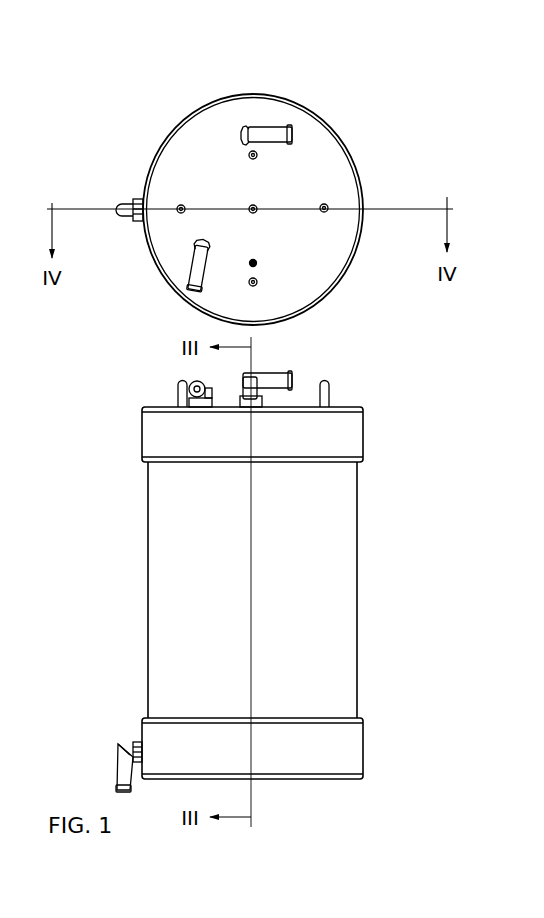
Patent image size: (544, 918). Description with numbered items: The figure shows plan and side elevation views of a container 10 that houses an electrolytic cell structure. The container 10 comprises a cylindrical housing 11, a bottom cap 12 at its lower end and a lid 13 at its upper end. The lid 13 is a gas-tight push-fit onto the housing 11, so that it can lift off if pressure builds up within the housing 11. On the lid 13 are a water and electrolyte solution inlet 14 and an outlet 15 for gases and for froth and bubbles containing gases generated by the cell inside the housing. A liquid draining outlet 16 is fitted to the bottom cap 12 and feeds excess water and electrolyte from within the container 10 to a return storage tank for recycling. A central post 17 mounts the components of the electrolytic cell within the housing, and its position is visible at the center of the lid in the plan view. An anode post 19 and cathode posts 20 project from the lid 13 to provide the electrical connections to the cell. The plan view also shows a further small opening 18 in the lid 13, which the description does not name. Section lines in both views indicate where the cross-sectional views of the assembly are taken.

The container 10 is at (370, 133).
The cylindrical housing 11 is at (328, 655).
The bottom cap 12 is at (355, 762).
The lid 13 is at (351, 438).
The water and electrolyte solution inlet 14 is at (271, 127).
The outlet 15 is at (190, 273).
The liquid draining outlet 16 is at (117, 747).
The central post 17 is at (258, 213).
The hole 18 is at (249, 153).
The anode post 19 is at (257, 287).
The cathode posts 20 is at (178, 205).